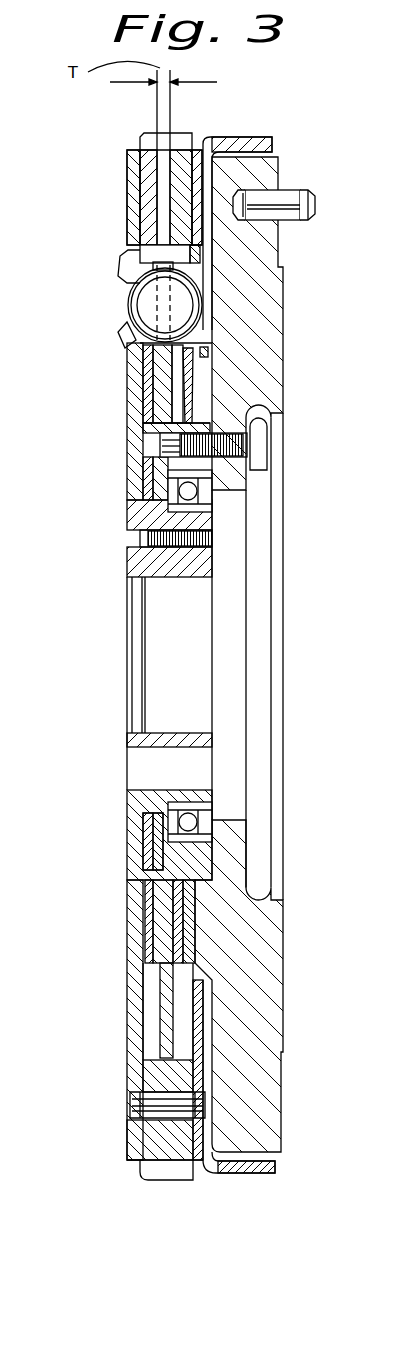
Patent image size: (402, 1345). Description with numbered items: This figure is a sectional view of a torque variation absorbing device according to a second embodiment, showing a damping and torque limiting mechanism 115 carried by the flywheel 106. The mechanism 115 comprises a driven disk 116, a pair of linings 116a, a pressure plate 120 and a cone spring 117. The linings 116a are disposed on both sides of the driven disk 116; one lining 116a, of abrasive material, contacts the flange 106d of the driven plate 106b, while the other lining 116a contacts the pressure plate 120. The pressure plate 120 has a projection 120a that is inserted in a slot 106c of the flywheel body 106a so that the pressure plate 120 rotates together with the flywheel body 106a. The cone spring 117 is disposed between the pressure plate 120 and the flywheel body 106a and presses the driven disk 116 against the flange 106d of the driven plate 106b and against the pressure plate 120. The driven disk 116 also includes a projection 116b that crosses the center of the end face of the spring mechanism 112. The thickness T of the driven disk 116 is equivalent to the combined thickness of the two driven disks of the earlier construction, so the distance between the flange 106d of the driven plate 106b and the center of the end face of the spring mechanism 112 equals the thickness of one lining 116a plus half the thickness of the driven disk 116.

The flywheel 106 is at (285, 173).
The flywheel body 106a is at (250, 385).
The driven plate 106b is at (177, 858).
The slot 106c is at (203, 357).
The flange 106d is at (150, 903).
The spring mechanism 112 is at (118, 317).
The damping and torque limiting mechanism 115 is at (120, 394).
The driven disk 116 is at (165, 1022).
The linings 116a is at (153, 928).
The projection 116b is at (150, 300).
The cone spring 117 is at (197, 931).
The pressure plate 120 is at (180, 406).
The projection 120a is at (207, 350).